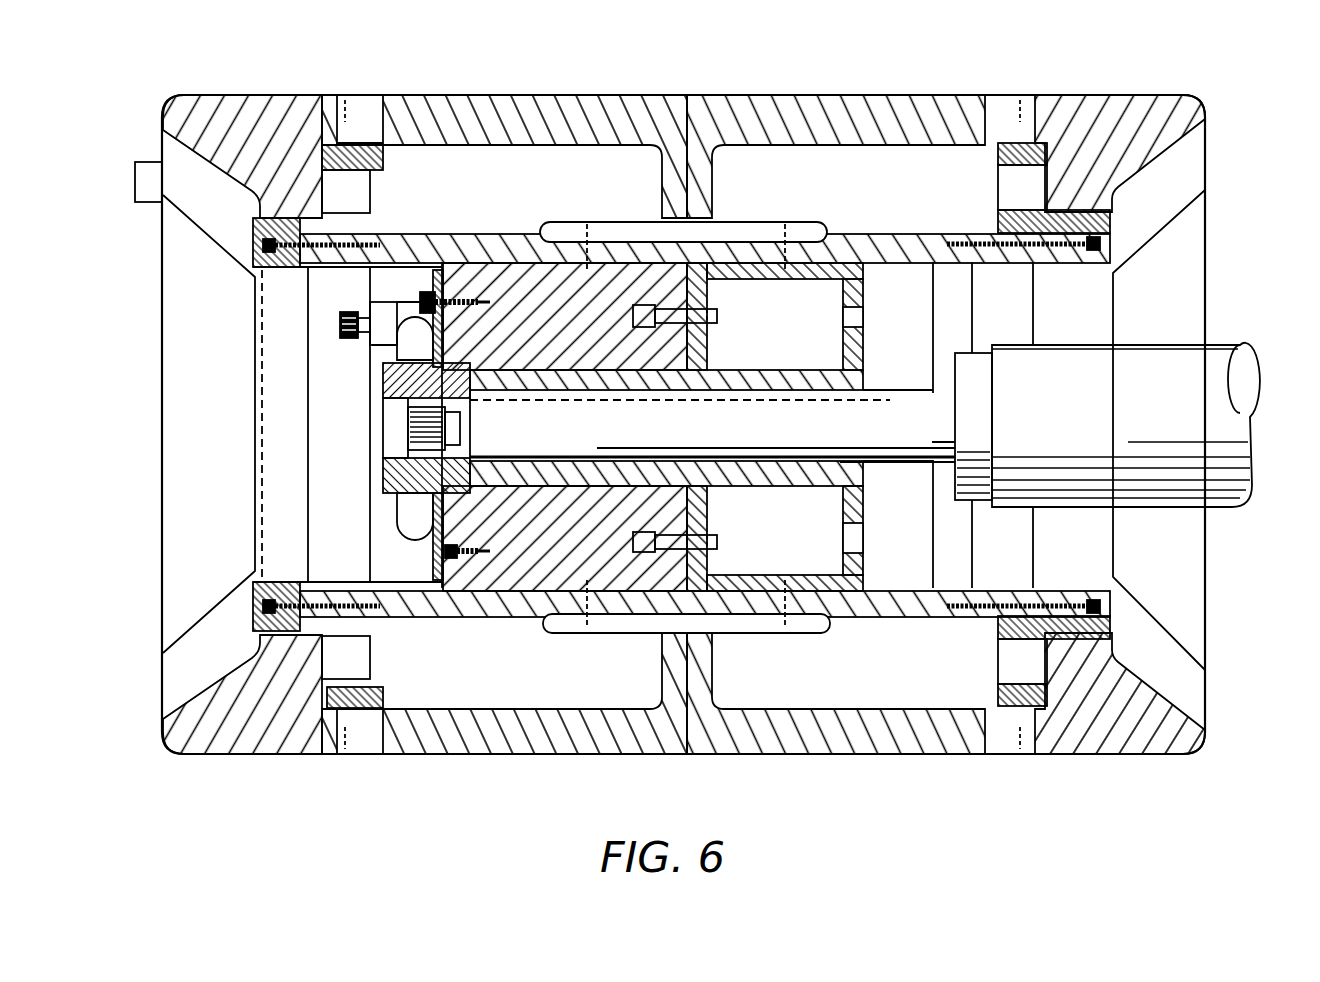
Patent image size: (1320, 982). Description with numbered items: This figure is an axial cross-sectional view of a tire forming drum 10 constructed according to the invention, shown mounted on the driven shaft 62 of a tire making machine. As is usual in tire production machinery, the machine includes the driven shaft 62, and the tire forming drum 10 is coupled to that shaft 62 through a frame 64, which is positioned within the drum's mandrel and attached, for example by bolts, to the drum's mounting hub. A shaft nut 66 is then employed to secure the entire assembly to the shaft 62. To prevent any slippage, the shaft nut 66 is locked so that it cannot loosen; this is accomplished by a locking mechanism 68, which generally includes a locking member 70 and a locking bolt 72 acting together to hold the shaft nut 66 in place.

The tire forming drum 10 is at (968, 774).
The shaft 62 is at (1215, 505).
The frame 64 is at (875, 348).
The shaft nut 66 is at (396, 536).
The locking mechanism 68 is at (391, 299).
The locking member 70 is at (378, 352).
The locking bolt 72 is at (340, 322).